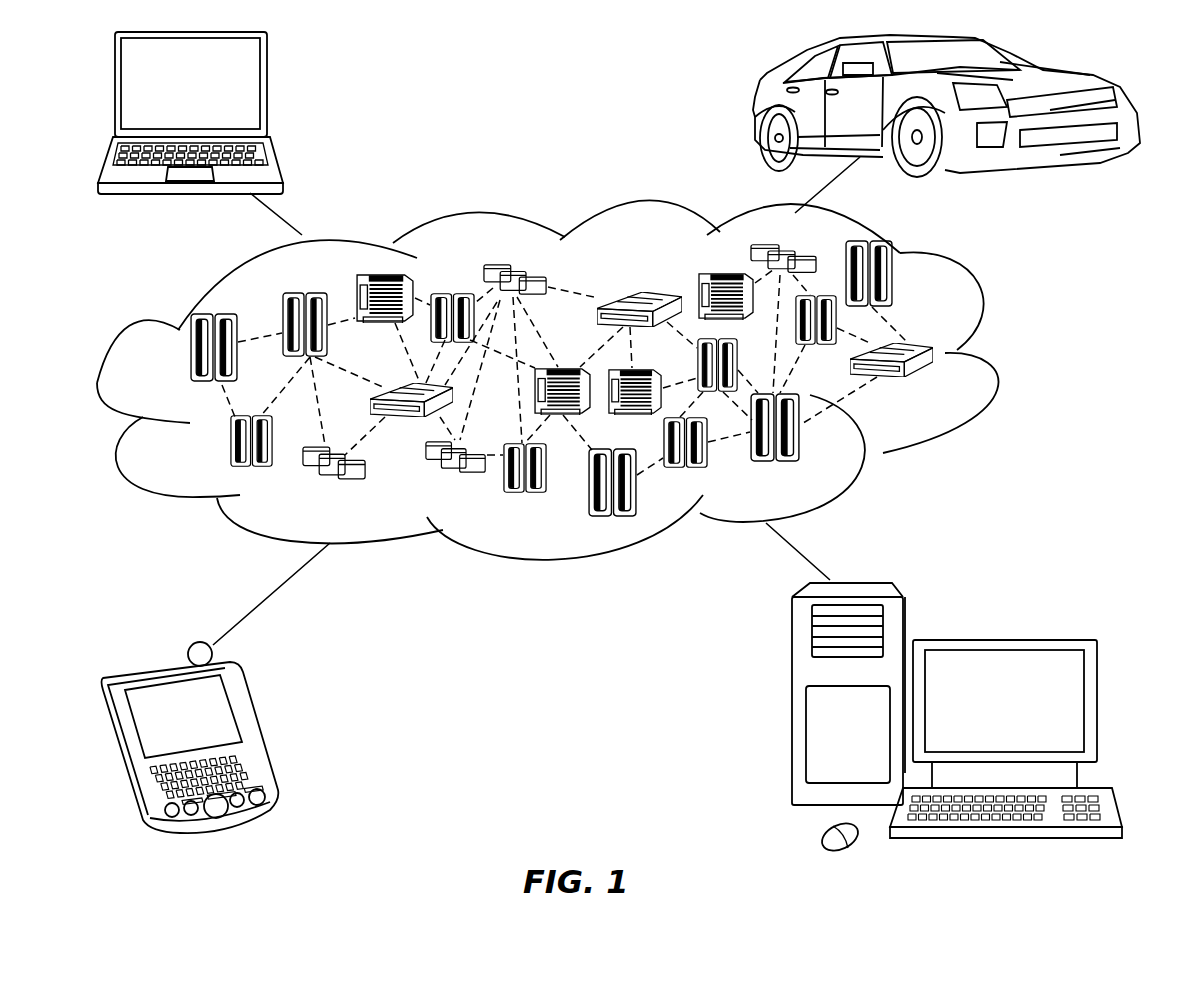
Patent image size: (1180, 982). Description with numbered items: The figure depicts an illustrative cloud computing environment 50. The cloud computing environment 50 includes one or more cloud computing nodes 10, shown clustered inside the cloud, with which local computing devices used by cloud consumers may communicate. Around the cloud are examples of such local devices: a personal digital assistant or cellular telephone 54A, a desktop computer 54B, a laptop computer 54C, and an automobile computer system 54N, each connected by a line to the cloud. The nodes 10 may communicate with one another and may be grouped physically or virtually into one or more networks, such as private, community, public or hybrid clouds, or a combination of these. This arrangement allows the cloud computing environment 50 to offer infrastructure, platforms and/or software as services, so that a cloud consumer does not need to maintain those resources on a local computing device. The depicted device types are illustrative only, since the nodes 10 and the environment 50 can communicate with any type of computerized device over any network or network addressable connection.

The cloud computing node 10 is at (942, 388).
The cloud computing environment 50 is at (996, 357).
The personal digital assistant or cellular telephone 54A is at (257, 727).
The desktop computer 54B is at (1000, 637).
The laptop computer 54C is at (267, 92).
The automobile computer system 54N is at (762, 108).